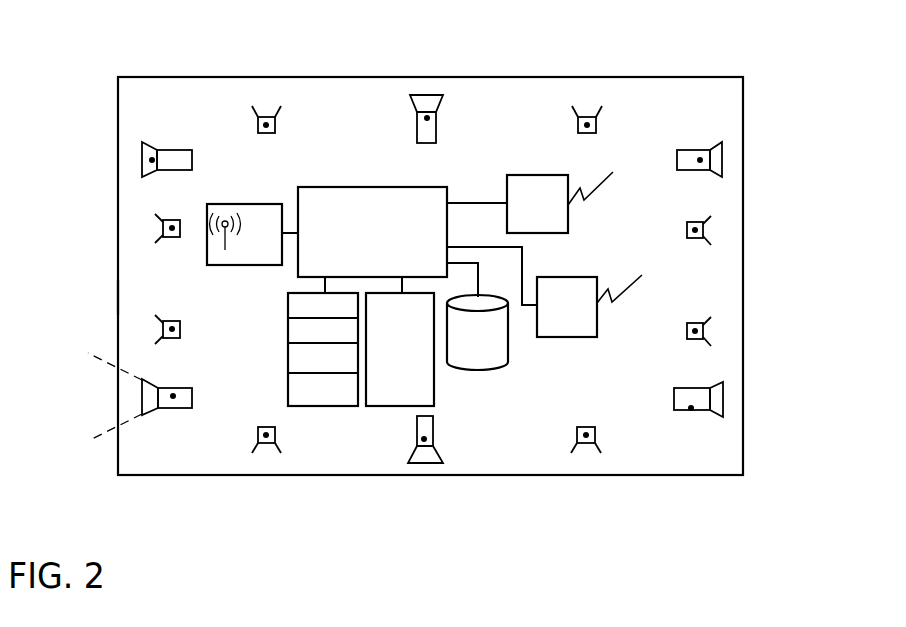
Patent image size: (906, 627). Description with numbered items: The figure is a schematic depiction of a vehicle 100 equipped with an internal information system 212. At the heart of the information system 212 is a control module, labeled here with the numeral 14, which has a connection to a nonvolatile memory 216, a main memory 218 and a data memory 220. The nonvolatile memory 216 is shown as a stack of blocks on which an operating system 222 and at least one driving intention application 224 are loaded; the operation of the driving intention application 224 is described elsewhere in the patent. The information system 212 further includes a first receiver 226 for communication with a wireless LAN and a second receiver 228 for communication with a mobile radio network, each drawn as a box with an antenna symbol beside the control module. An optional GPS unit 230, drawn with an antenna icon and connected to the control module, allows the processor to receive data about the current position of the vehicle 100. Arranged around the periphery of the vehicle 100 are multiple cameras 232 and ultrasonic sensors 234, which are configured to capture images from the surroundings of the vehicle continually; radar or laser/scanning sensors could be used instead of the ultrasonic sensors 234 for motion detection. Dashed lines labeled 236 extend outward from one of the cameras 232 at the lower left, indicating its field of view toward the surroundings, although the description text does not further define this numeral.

The vehicle 100 is at (118, 297).
The control module 14 is at (355, 188).
The internal information system 212 is at (668, 122).
The nonvolatile memory 216 is at (323, 417).
The main memory 218 is at (379, 404).
The data memory 220 is at (482, 372).
The operating system 222 is at (323, 389).
The driving intention application 224 is at (304, 370).
The first receiver 226 is at (567, 218).
The second receiver 228 is at (546, 337).
The GPS unit 230 is at (207, 257).
The cameras 232 is at (152, 160).
The ultrasonic sensors 234 is at (266, 125).
The sound beam 236 is at (105, 434).